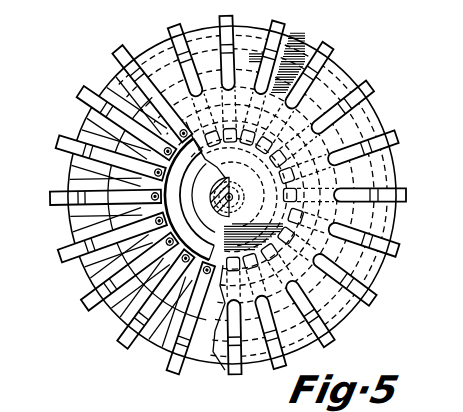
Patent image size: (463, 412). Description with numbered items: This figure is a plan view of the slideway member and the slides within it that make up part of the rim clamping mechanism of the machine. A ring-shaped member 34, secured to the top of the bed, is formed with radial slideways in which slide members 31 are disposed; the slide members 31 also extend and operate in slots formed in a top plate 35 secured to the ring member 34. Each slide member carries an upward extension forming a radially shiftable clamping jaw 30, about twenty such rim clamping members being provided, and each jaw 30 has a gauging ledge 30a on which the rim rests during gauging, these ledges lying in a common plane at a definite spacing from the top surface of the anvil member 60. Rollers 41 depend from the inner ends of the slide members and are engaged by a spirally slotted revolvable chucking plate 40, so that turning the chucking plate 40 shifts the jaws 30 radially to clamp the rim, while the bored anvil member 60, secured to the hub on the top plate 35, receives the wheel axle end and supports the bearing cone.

The clamping jaws 30 is at (56, 141).
The gauging ledges 30a is at (86, 256).
The slide members 31 is at (122, 113).
The ring-shaped member 34 is at (117, 147).
The top plate 35 is at (377, 274).
The chucking plate 40 is at (71, 227).
The rollers 41 is at (82, 127).
The anvil member 60 is at (233, 198).